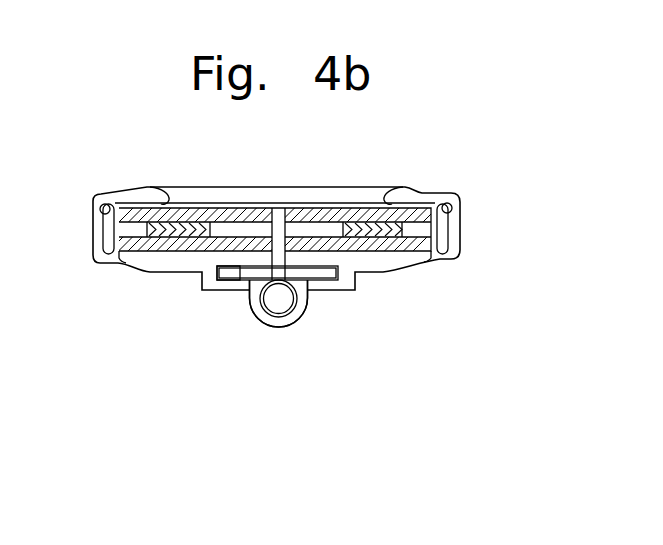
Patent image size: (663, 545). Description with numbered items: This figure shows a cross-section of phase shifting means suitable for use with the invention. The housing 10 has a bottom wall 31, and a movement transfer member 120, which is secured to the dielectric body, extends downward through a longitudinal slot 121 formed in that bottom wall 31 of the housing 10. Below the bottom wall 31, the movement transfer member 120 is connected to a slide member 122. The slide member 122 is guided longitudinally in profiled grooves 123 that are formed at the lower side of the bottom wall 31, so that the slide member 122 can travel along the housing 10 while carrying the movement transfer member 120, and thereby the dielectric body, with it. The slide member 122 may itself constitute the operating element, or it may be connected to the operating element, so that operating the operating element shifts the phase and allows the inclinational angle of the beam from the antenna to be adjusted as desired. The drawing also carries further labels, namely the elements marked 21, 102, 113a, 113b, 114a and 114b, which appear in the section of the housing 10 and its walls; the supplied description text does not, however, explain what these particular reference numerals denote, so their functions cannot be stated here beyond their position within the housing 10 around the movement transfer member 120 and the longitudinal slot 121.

The housing 10 is at (404, 224).
The cover plate 21 is at (326, 195).
The bottom wall 31 is at (446, 261).
The adhesive layer 102 is at (147, 229).
The first upper holding portion 113a is at (150, 187).
The first lower holding portion 113b is at (134, 257).
The second upper holding portion 114a is at (393, 213).
The second lower holding portion 114b is at (373, 236).
The movement transfer member 120 is at (272, 209).
The longitudinal slot 121 is at (322, 269).
The slide member 122 is at (283, 321).
The profiled grooves 123 is at (222, 272).